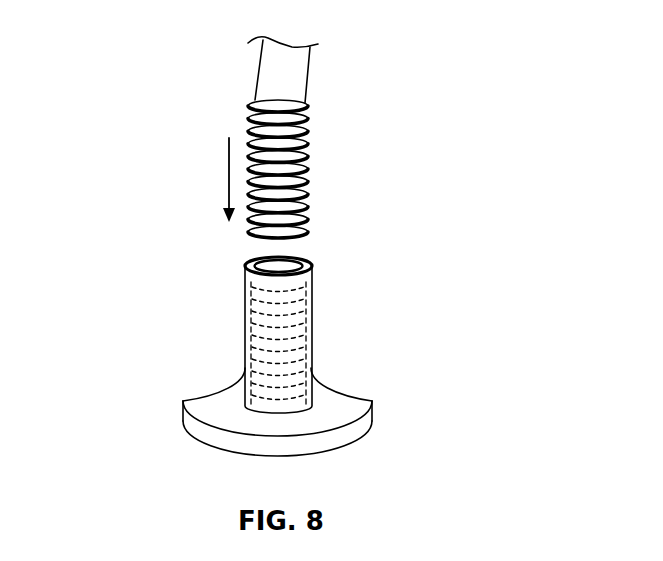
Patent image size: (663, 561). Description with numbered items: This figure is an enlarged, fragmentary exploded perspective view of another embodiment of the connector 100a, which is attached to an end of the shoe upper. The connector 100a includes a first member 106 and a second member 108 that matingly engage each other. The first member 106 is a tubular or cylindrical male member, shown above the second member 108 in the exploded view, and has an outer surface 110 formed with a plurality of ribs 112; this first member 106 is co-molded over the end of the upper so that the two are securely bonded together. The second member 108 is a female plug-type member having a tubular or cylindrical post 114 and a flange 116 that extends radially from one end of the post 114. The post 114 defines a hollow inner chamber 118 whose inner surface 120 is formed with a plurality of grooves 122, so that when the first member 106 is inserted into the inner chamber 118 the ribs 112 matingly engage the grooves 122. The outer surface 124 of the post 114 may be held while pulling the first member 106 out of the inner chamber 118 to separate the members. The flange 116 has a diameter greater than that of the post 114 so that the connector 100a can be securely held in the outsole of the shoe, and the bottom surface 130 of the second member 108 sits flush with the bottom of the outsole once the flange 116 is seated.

The connector 100a is at (440, 156).
The first member 106 is at (370, 110).
The second member 108 is at (415, 316).
The outer surface 110 is at (255, 97).
The rib 112 is at (306, 204).
The post 114 is at (243, 298).
The flange 116 is at (348, 410).
The inner chamber 118 is at (292, 266).
The inner surface 120 is at (245, 263).
The groove 122 is at (312, 348).
The outer surface of the post 124 is at (312, 348).
The bottom surface 130 is at (343, 455).